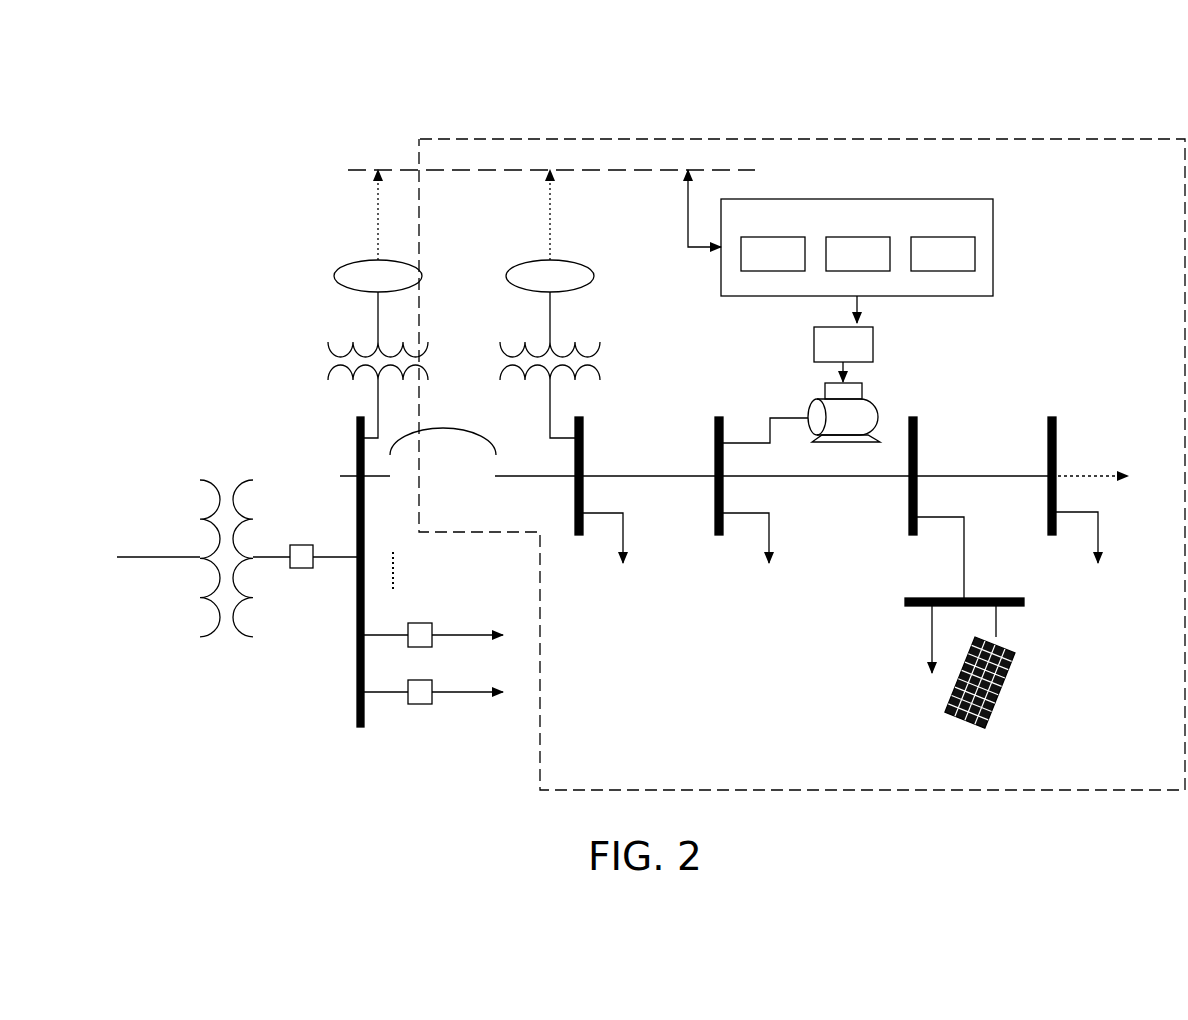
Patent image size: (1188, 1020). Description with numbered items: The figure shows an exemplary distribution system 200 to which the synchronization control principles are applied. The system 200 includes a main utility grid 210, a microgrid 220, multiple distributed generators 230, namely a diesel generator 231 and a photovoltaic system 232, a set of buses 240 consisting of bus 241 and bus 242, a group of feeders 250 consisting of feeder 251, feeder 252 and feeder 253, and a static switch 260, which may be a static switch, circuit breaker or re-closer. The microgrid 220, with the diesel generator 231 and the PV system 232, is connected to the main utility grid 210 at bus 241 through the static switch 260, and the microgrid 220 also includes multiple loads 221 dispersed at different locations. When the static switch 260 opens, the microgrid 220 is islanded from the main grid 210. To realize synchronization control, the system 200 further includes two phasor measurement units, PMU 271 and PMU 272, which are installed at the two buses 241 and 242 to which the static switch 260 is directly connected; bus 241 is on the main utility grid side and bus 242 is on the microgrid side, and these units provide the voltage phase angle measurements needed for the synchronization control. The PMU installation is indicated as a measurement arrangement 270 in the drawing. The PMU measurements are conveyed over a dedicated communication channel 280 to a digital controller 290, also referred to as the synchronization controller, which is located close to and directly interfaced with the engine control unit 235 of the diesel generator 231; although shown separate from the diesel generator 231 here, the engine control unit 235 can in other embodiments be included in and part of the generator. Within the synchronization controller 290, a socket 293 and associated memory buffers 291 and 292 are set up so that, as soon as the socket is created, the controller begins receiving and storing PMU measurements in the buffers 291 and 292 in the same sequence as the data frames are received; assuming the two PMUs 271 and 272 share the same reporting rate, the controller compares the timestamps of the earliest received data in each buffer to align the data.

The distribution system 200 is at (987, 82).
The utility grid 210 is at (245, 277).
The microgrid 220 is at (486, 138).
The loads 221 is at (733, 660).
The distributed generators 230 is at (922, 571).
The diesel generator 231 is at (801, 413).
The photovoltaic system 232 is at (958, 730).
The engine control unit 235 is at (843, 339).
The buses 240 is at (585, 660).
The bus 241 is at (350, 426).
The bus 242 is at (586, 452).
The feeders 250 is at (383, 703).
The feeder 251 is at (411, 692).
The feeder 252 is at (411, 635).
The feeder 253 is at (345, 475).
The static switch 260 is at (465, 418).
The sensor transformer 270 is at (356, 304).
The phasor measurement unit 271 is at (378, 304).
The phasor measurement unit 272 is at (550, 304).
The dedicated communication channel 280 is at (660, 168).
The digital controller 290 is at (840, 233).
The memory buffer 291 is at (773, 254).
The memory buffer 292 is at (858, 254).
The socket 293 is at (943, 254).